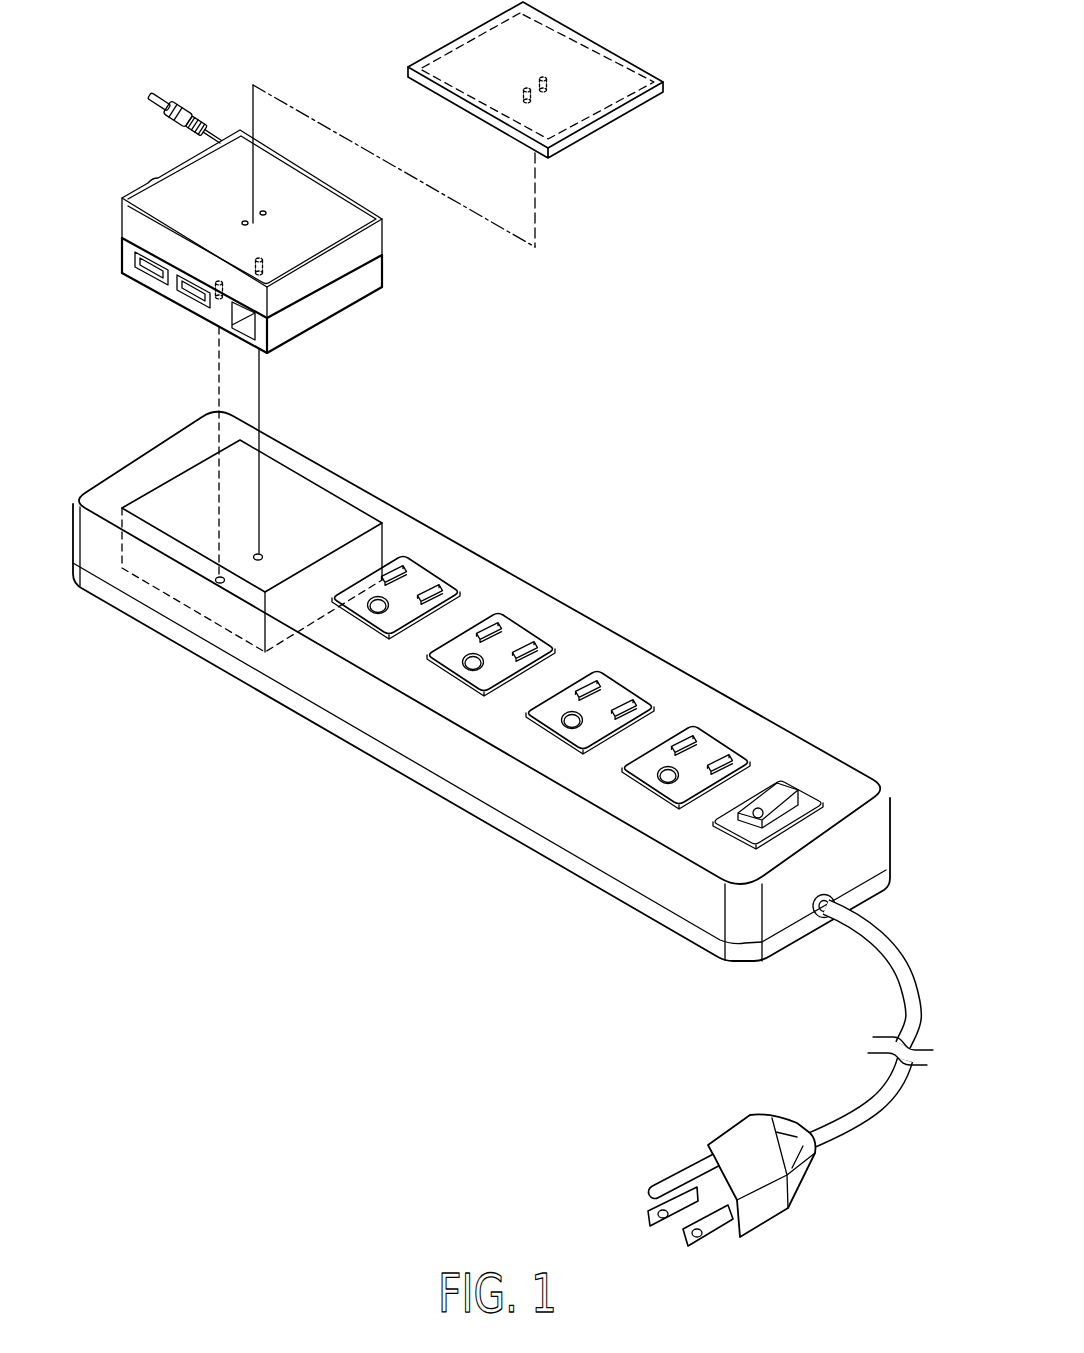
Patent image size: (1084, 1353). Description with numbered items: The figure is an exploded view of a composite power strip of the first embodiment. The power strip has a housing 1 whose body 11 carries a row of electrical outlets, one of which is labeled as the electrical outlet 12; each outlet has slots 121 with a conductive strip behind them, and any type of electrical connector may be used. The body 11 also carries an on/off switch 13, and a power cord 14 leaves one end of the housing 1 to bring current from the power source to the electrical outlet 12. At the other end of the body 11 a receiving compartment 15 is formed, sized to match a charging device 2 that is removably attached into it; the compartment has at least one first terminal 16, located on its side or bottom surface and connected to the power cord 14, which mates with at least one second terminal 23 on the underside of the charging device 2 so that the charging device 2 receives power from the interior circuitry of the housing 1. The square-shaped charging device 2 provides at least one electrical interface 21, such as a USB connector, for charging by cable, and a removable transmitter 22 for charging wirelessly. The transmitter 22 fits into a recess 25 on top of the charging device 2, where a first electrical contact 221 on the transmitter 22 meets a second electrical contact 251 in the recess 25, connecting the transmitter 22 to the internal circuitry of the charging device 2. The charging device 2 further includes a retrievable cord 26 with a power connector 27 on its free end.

The housing 1 is at (503, 826).
The body 11 is at (462, 768).
The electrical outlet 12 is at (686, 708).
The slots 121 is at (680, 737).
The on/off switch 13 is at (783, 790).
The power cord 14 is at (907, 993).
The receiving compartment 15 is at (312, 480).
The first terminal 16 is at (258, 562).
The charging device 2 is at (405, 288).
The electrical interface 21 is at (195, 295).
The transmitter 22 is at (557, 101).
The first electrical contact 221 is at (530, 103).
The second terminal 23 is at (219, 299).
The recess 25 is at (293, 210).
The second electrical contact 251 is at (266, 214).
The retrievable cord 26 is at (210, 141).
The power connector 27 is at (182, 104).